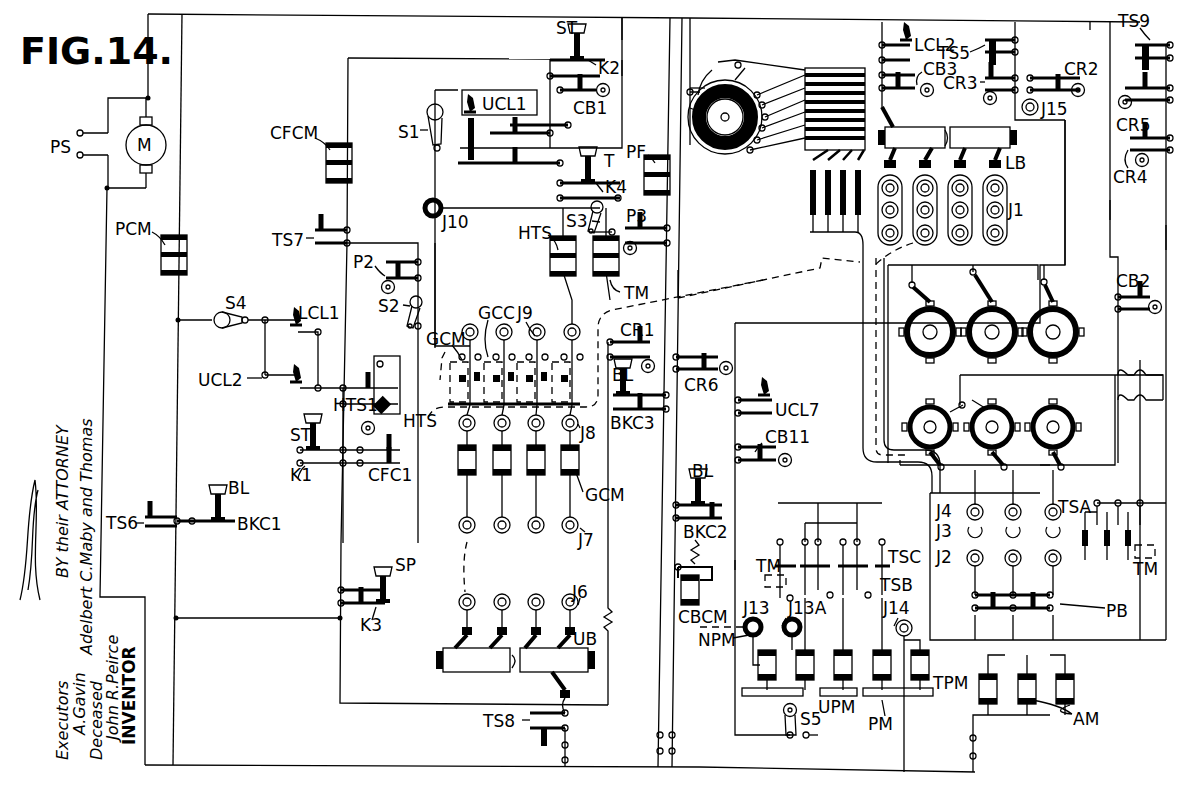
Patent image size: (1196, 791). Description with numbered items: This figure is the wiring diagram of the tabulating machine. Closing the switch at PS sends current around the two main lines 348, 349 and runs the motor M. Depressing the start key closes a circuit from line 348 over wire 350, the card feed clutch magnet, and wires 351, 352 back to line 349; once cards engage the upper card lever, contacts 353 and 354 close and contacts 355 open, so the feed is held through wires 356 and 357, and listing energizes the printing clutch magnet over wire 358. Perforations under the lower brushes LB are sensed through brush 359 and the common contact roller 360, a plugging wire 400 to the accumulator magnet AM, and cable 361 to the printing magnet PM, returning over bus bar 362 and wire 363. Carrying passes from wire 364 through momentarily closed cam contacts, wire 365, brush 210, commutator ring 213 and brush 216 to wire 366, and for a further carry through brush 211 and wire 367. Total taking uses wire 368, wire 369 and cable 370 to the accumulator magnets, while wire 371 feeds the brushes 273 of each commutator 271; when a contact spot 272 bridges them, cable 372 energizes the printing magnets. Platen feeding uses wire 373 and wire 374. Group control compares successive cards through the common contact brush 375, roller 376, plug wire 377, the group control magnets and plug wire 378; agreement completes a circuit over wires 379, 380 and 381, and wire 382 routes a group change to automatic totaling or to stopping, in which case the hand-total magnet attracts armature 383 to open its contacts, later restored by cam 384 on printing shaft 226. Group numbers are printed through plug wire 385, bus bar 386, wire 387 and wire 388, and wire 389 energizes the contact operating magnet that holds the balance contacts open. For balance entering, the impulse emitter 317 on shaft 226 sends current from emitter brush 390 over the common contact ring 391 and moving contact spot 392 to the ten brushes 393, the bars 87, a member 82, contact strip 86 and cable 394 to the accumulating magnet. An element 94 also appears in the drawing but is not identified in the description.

The main line 348 is at (335, 17).
The main line 349 is at (258, 762).
The wire 350 is at (395, 58).
The wire 351 is at (275, 618).
The wire 352 is at (172, 680).
The contacts 353 is at (557, 126).
The contacts 354 is at (521, 135).
The contacts 355 is at (506, 160).
The wire 356 is at (622, 70).
The wire 357 is at (548, 77).
The wire 358 is at (181, 165).
The brush 359 is at (895, 125).
The common contact roller 360 is at (928, 132).
The cable 361 is at (942, 470).
The bus bar 362 is at (915, 696).
The wire 363 is at (960, 740).
The wire 364 is at (1110, 218).
The wire 365 is at (1088, 465).
The wire 366 is at (1108, 640).
The wire 367 is at (992, 380).
The wire 368 is at (1092, 32).
The wire 369 is at (1166, 240).
The cable 370 is at (1075, 583).
The wire 371 is at (1065, 245).
The cable 372 is at (935, 393).
The wire 373 is at (665, 44).
The wire 374 is at (662, 545).
The common contact brush 375 is at (545, 682).
The roller 376 is at (466, 672).
The plug wire 377 is at (449, 568).
The plug wire 378 is at (815, 275).
The wire 379 is at (608, 630).
The wire 380 is at (582, 300).
The wire 381 is at (436, 276).
The wire 382 is at (498, 212).
The armature 383 is at (372, 360).
The cam 384 is at (369, 443).
The plug wire 385 is at (742, 627).
The bus bar 386 is at (768, 696).
The wire 387 is at (735, 565).
The wire 388 is at (680, 280).
The wire 389 is at (725, 628).
The emitter brush 390 is at (688, 85).
The common contact ring 391 is at (700, 110).
The moving contact spot 392 is at (707, 66).
The brushes 393 is at (747, 58).
The cable 394 is at (862, 357).
The plugging wire 400 is at (875, 374).
The shaft 226 is at (710, 118).
The impulse emitter 317 is at (708, 140).
The member 82 is at (886, 180).
The contact strip 86 is at (810, 192).
The bars 87 is at (840, 70).
The connector 94 is at (850, 222).
The commutator 271 is at (975, 318).
The contact spot 272 is at (929, 323).
The brushes 273 is at (1048, 318).
The brush 211 is at (1016, 412).
The commutator ring 213 is at (1085, 385).
The brush 216 is at (1040, 430).
The brush 210 is at (1045, 468).